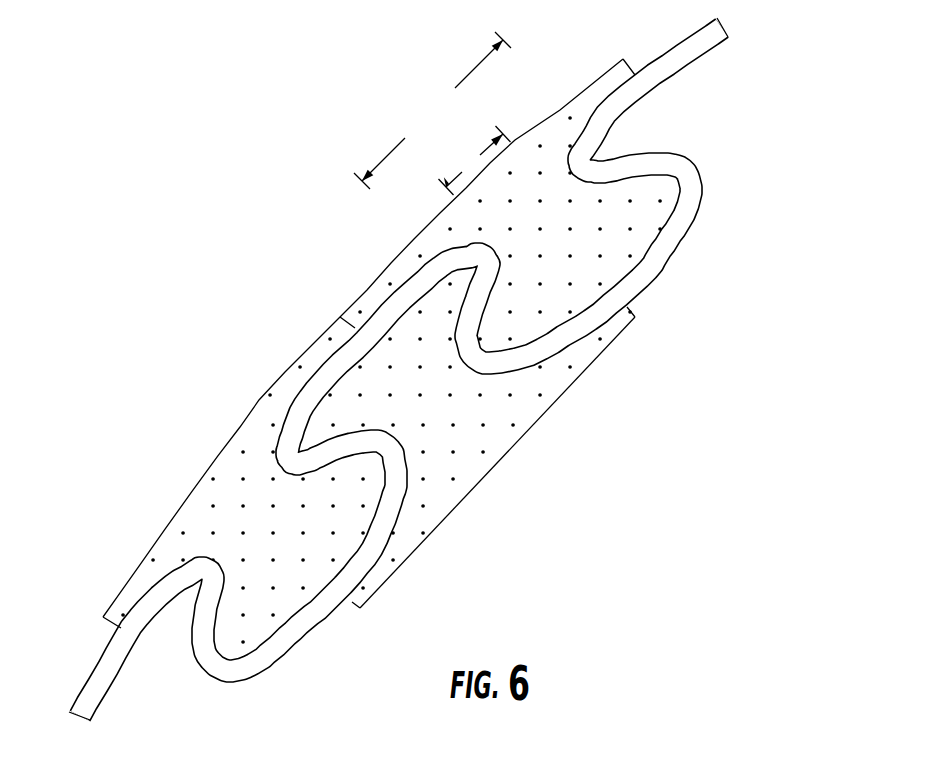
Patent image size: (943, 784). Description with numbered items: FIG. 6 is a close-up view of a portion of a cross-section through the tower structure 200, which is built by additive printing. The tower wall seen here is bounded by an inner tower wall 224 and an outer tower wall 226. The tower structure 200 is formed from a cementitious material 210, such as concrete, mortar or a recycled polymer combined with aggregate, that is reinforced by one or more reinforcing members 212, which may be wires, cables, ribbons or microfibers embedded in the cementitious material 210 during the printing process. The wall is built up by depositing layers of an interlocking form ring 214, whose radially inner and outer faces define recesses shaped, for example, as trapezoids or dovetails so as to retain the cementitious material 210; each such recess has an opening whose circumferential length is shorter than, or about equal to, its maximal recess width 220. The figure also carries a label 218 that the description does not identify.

The tower structure 200 is at (459, 362).
The cementitious material 210 is at (346, 343).
The reinforcing member 212 is at (213, 510).
The interlocking form ring 214 is at (297, 640).
The band width 218 is at (475, 160).
The maximal recess width 220 is at (432, 110).
The inner tower wall 224 is at (461, 527).
The outer tower wall 226 is at (236, 330).